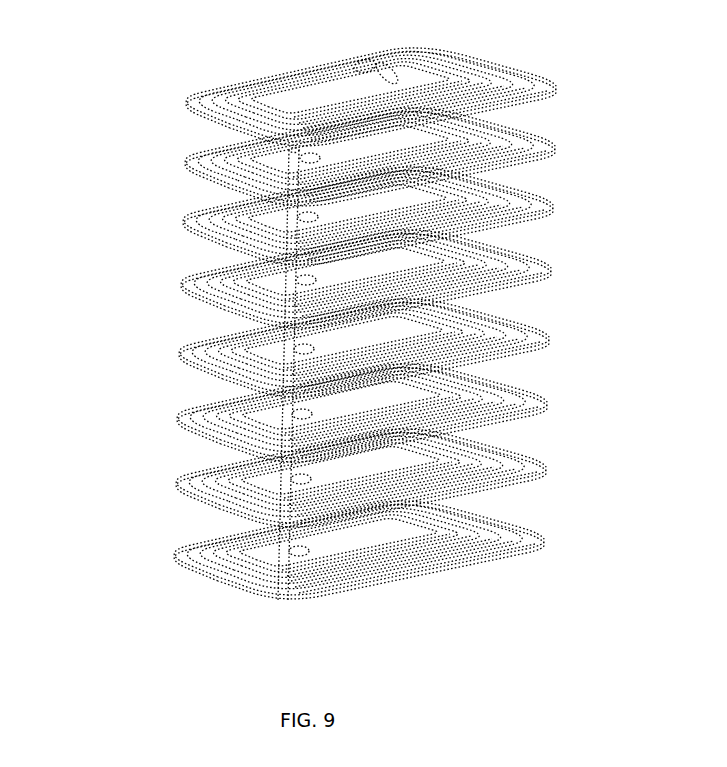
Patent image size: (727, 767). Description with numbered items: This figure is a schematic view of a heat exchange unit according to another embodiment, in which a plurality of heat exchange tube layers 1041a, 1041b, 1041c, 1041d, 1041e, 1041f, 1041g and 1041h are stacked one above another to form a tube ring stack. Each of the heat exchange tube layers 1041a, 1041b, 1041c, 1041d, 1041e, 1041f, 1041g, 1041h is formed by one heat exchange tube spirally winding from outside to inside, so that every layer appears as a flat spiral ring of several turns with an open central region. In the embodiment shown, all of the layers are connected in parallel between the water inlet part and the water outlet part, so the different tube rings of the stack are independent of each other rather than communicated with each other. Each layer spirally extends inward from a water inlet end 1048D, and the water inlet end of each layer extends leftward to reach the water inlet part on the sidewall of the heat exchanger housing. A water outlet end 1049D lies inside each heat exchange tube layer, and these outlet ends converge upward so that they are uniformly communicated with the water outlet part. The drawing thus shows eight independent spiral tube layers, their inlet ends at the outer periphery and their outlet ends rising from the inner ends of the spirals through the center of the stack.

The heat exchange tube layer 1041a is at (222, 90).
The heat exchange tube layer 1041b is at (187, 160).
The heat exchange tube layer 1041c is at (203, 227).
The heat exchange tube layer 1041d is at (200, 293).
The heat exchange tube layer 1041e is at (200, 363).
The heat exchange tube layer 1041f is at (197, 420).
The heat exchange tube layer 1041g is at (197, 502).
The heat exchange tube layer 1041h is at (193, 568).
The water outlet end 1049D is at (363, 63).
The water inlet end 1048D is at (293, 147).